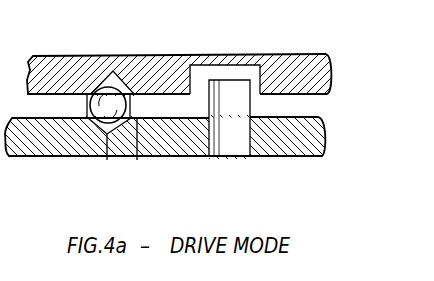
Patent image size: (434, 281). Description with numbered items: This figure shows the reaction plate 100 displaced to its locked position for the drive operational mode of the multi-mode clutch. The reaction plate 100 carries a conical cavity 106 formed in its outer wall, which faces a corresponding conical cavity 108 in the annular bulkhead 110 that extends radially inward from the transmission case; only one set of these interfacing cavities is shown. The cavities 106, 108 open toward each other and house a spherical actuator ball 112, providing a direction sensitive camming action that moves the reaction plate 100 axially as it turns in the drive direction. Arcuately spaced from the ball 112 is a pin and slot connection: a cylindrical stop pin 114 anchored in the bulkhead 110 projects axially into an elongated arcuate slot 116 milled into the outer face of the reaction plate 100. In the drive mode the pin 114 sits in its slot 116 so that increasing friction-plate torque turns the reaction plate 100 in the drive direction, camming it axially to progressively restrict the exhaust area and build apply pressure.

The reaction plate 100 is at (307, 72).
The conical cavity 106 is at (88, 96).
The conical cavity 108 is at (137, 157).
The annular bulkhead 110 is at (299, 137).
The spherical actuator ball 112 is at (105, 157).
The stop pin 114 is at (240, 150).
The slot 116 is at (190, 72).